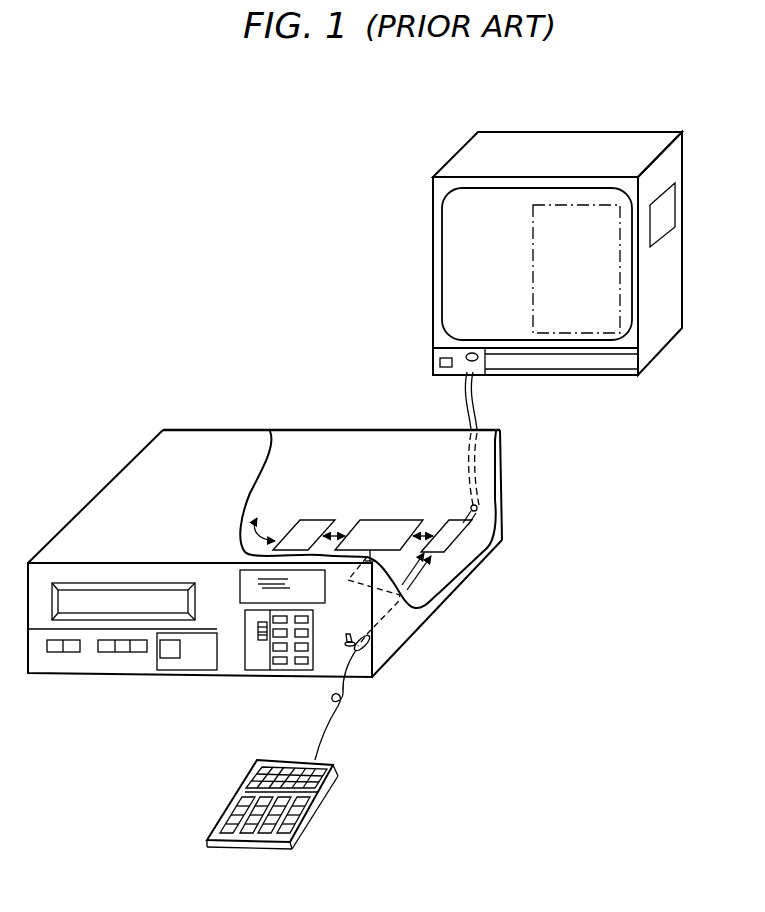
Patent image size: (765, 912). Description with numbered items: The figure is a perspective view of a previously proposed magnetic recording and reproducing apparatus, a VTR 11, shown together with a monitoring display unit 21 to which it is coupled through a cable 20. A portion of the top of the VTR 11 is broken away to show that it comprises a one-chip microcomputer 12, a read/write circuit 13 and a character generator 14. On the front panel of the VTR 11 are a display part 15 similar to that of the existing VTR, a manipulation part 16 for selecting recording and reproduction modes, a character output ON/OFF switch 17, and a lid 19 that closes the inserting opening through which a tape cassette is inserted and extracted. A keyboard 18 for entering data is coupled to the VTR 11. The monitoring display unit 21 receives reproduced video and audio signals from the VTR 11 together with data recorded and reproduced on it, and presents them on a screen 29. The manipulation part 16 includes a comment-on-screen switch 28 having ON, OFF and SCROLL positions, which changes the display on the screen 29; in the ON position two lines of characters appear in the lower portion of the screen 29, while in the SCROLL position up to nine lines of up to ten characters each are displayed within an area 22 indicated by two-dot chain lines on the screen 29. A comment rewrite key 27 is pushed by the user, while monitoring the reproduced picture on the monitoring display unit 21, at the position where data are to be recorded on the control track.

The VTR 11 is at (82, 498).
The one-chip microcomputer 12 is at (395, 518).
The read/write circuit 13 is at (310, 533).
The character generator 14 is at (455, 535).
The display part 15 is at (248, 585).
The manipulation part 16 is at (252, 660).
The character output ON/OFF switch 17 is at (348, 634).
The keyboard 18 is at (240, 795).
The lid 19 is at (113, 600).
The cable 20 is at (477, 402).
The monitoring display unit 21 is at (593, 140).
The area 22 is at (608, 282).
The comment rewrite key 27 is at (258, 618).
The comment-on-screen switch 28 is at (265, 641).
The screen 29 is at (458, 241).